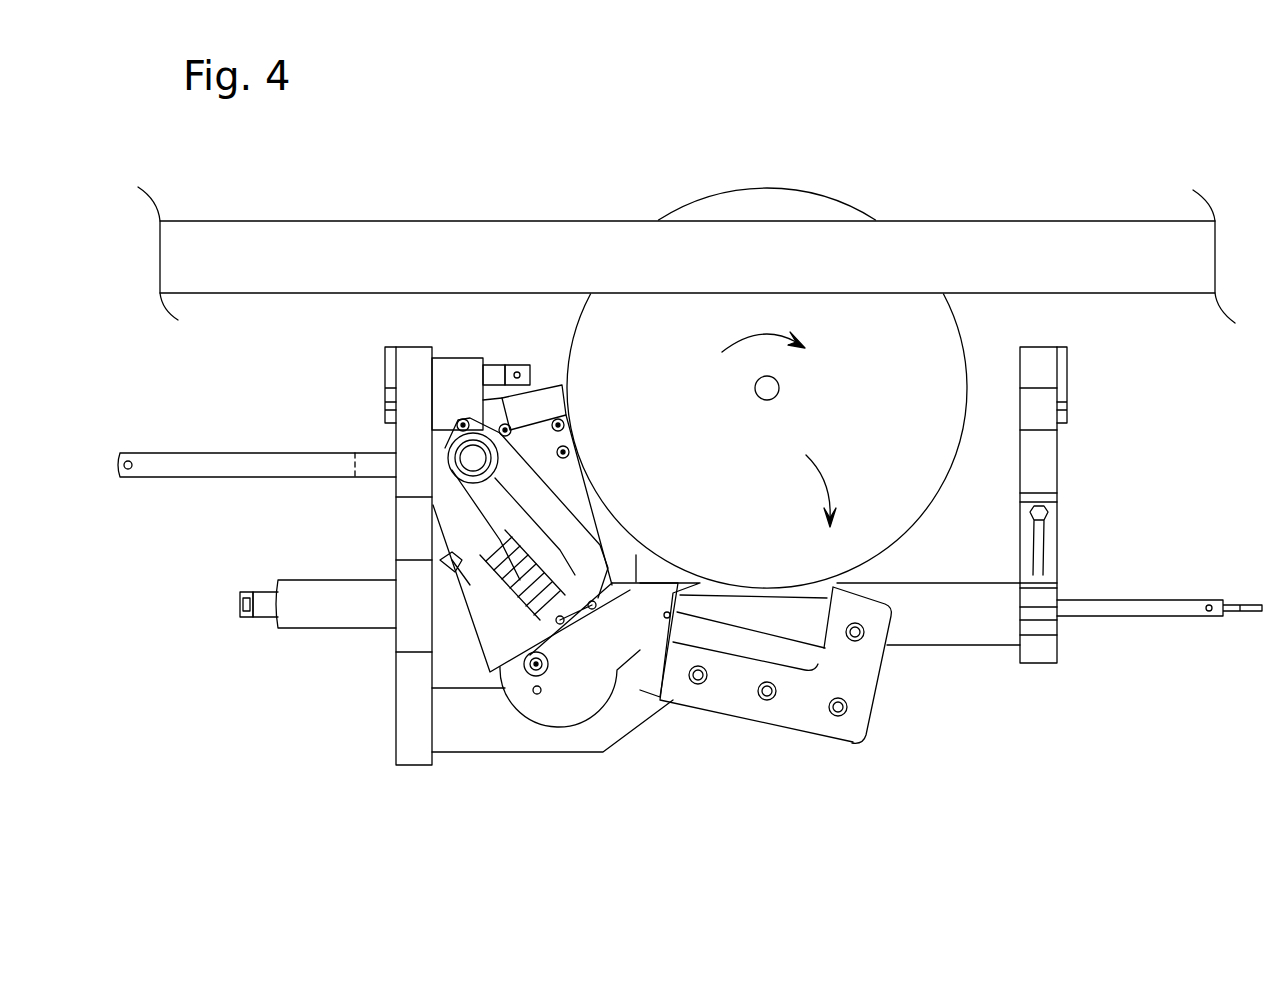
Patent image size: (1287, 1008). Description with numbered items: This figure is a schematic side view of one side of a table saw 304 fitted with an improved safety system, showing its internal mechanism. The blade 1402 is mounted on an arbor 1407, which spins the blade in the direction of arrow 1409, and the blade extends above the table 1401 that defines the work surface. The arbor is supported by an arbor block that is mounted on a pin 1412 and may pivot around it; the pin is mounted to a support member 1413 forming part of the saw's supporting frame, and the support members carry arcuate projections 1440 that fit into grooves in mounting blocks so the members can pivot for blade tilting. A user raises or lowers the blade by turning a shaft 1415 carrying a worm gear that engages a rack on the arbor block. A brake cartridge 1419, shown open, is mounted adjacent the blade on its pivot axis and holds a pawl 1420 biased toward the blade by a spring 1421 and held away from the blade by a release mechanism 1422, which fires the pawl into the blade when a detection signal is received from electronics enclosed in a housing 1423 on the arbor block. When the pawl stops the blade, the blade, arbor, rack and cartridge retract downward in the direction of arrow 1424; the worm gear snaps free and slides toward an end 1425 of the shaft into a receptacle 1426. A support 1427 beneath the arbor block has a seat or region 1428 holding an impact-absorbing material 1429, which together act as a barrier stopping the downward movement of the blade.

The deposition module assembly 304 is at (316, 711).
The table 1401 is at (1062, 230).
The blade 1402 is at (808, 200).
The arbor 1407 is at (782, 388).
The arrow 1409 is at (742, 334).
The pin 1412 is at (470, 458).
The support member 1413 is at (414, 755).
The shaft 1415 is at (1120, 600).
The brake cartridge 1419 is at (574, 674).
The pawl 1420 is at (575, 516).
The spring 1421 is at (434, 565).
The release mechanism 1422 is at (514, 676).
The housing 1423 is at (548, 395).
The arrow 1424 is at (846, 474).
The end of the shaft 1425 is at (247, 612).
The receptacle 1426 is at (340, 616).
The support 1427 is at (870, 657).
The seat or region 1428 is at (780, 622).
The impact-absorbing material 1429 is at (783, 660).
The arcuate projections 1440 is at (390, 360).